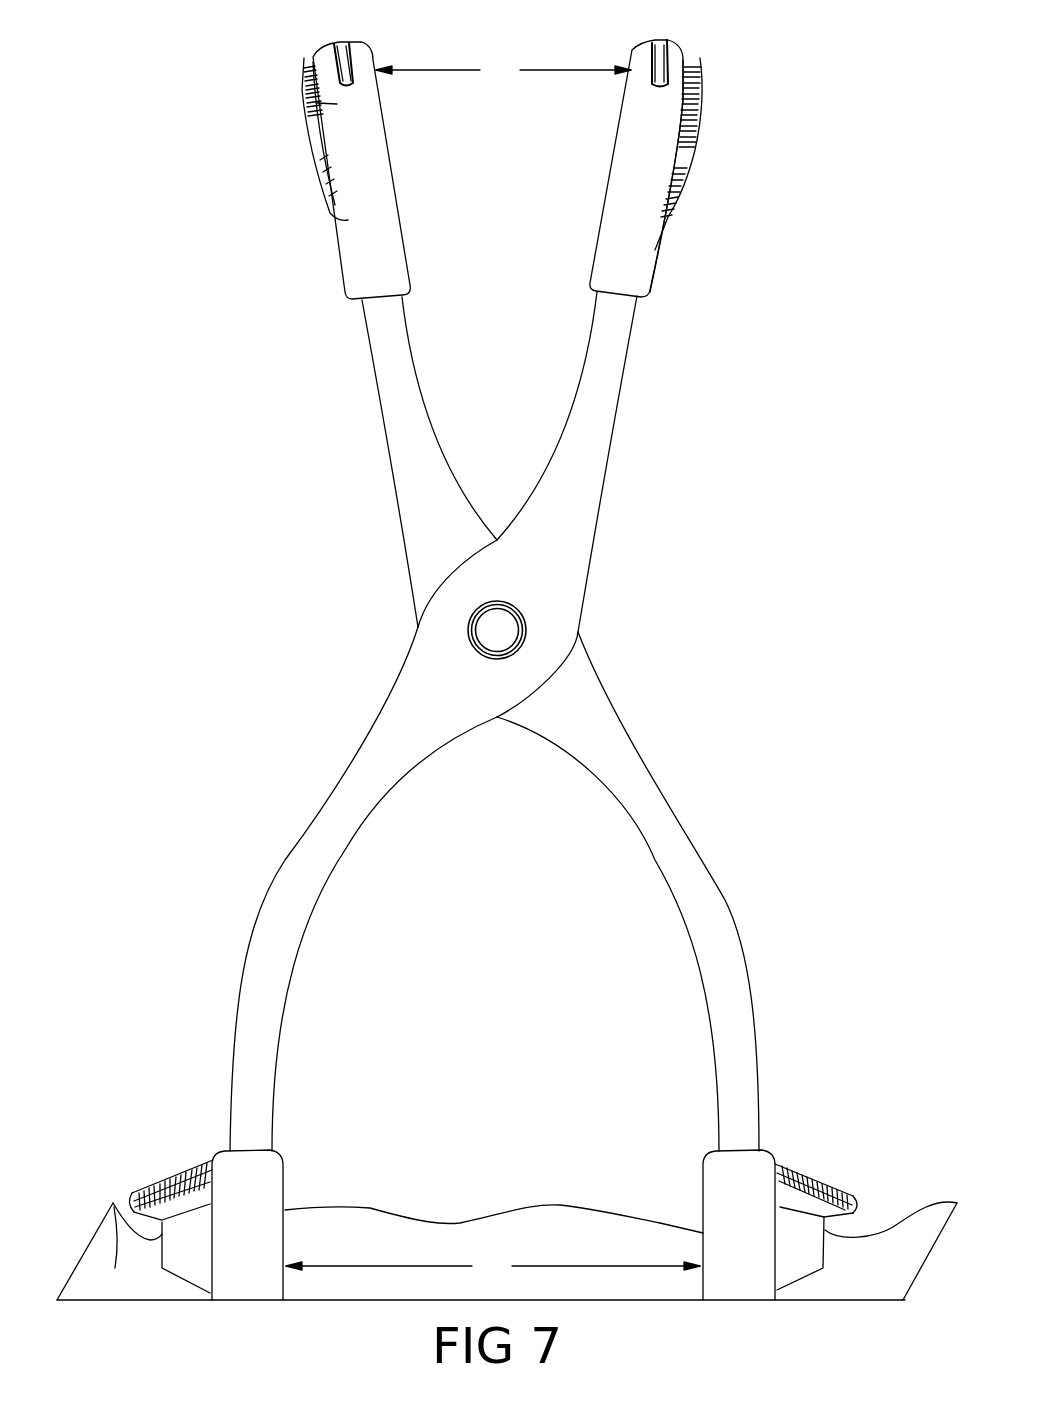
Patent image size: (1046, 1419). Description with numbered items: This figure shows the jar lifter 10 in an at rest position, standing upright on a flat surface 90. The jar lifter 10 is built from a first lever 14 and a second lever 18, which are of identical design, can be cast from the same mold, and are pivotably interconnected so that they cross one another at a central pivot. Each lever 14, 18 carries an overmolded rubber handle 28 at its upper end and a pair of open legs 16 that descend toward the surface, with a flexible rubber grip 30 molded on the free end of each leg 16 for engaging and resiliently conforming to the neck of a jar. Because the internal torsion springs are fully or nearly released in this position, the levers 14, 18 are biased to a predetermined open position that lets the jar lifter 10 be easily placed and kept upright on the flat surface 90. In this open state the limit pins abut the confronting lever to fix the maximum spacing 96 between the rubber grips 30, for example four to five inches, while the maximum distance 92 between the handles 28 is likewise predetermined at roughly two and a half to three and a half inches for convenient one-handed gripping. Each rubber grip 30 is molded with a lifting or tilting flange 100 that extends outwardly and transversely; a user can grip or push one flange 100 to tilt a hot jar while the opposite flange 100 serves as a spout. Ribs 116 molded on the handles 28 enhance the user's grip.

The jar lifter 10 is at (272, 505).
The first lever 14 is at (400, 402).
The open legs 16 is at (318, 836).
The second lever 18 is at (622, 347).
The rubber handle 28 is at (302, 95).
The rubber grip 30 is at (273, 1203).
The flat surface 90 is at (112, 1222).
The maximum distance between the handles 92 is at (503, 74).
The maximum spacing between the rubber grips 96 is at (493, 1267).
The lifting or tilting flange 100 is at (130, 1196).
The ribs 116 is at (336, 46).